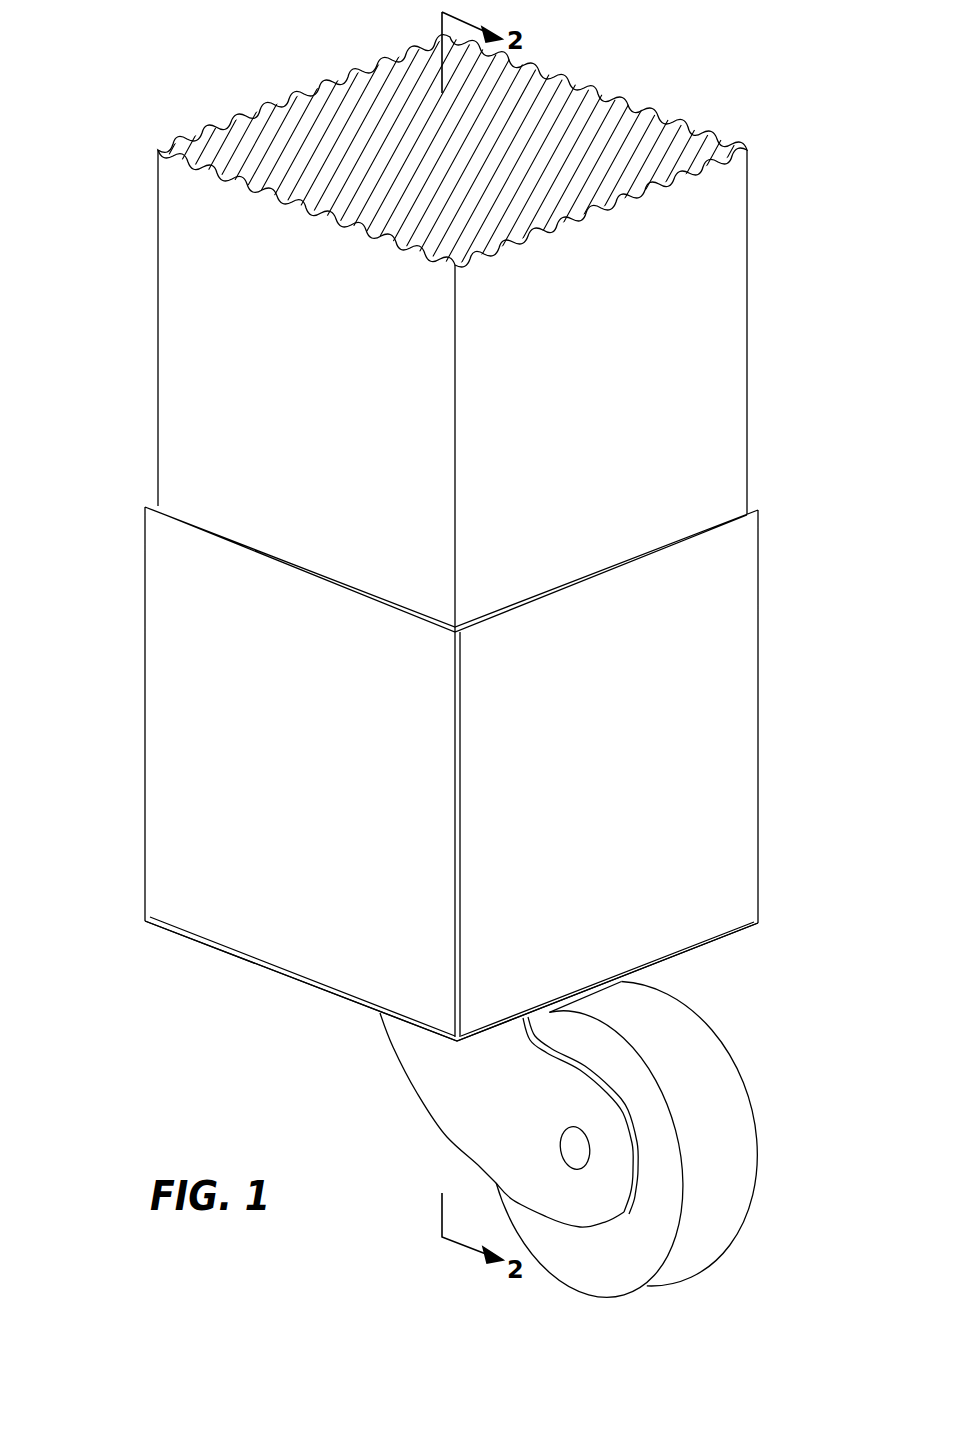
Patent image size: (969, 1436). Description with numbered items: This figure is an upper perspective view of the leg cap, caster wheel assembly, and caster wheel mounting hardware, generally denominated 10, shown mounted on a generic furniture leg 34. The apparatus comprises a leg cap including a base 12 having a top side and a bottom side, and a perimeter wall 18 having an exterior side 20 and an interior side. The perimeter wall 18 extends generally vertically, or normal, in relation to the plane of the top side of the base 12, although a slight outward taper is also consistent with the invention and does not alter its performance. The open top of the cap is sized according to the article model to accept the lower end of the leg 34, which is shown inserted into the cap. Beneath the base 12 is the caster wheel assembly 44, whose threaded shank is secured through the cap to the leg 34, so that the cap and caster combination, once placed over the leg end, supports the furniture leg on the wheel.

The leg cap, caster wheel assembly, and caster wheel mounting hardware 10 is at (118, 738).
The base 12 is at (228, 970).
The perimeter wall 18 is at (160, 873).
The exterior side 20 is at (678, 855).
The leg 34 is at (748, 300).
The caster wheel assembly 44 is at (425, 1103).